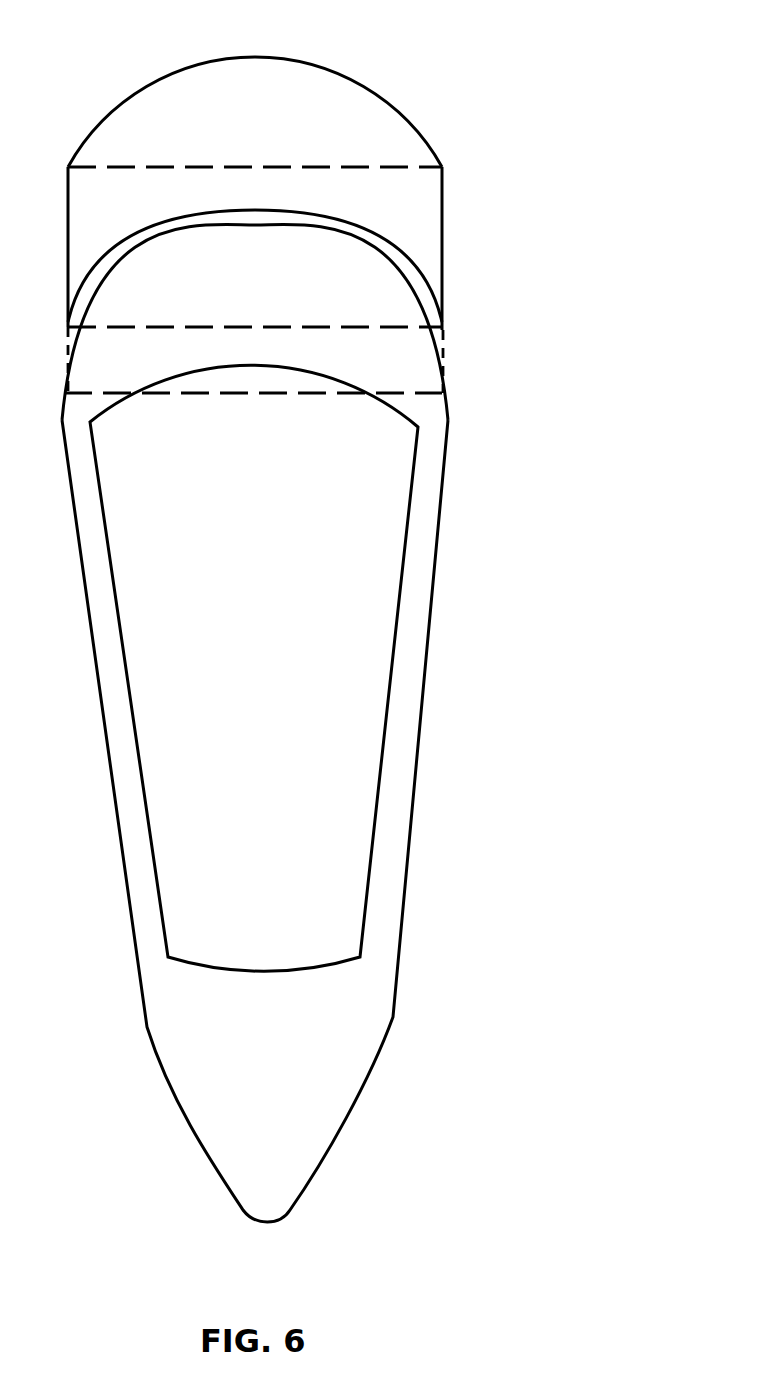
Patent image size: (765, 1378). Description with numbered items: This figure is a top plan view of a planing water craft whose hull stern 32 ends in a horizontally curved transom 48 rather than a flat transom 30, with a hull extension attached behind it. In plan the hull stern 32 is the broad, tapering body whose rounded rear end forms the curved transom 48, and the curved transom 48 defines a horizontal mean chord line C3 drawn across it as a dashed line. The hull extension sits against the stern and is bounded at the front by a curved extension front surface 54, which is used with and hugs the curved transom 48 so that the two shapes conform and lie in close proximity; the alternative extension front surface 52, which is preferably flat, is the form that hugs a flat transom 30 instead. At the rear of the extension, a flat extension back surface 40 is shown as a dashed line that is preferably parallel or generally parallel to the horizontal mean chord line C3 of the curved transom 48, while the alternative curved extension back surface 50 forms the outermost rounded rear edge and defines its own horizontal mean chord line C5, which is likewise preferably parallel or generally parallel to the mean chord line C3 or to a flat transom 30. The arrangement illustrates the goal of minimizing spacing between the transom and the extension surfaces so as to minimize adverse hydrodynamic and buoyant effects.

The curved extension back surface 50 is at (320, 47).
The flat extension back surface 40 is at (157, 167).
The mean chord line C5 is at (278, 152).
The curved extension front surface 54 is at (277, 198).
The flat transom 30 is at (223, 327).
The extension front surface 52 is at (333, 332).
The curved transom 48 is at (442, 331).
The hull stern 32 is at (433, 353).
The mean chord line C3 is at (233, 398).